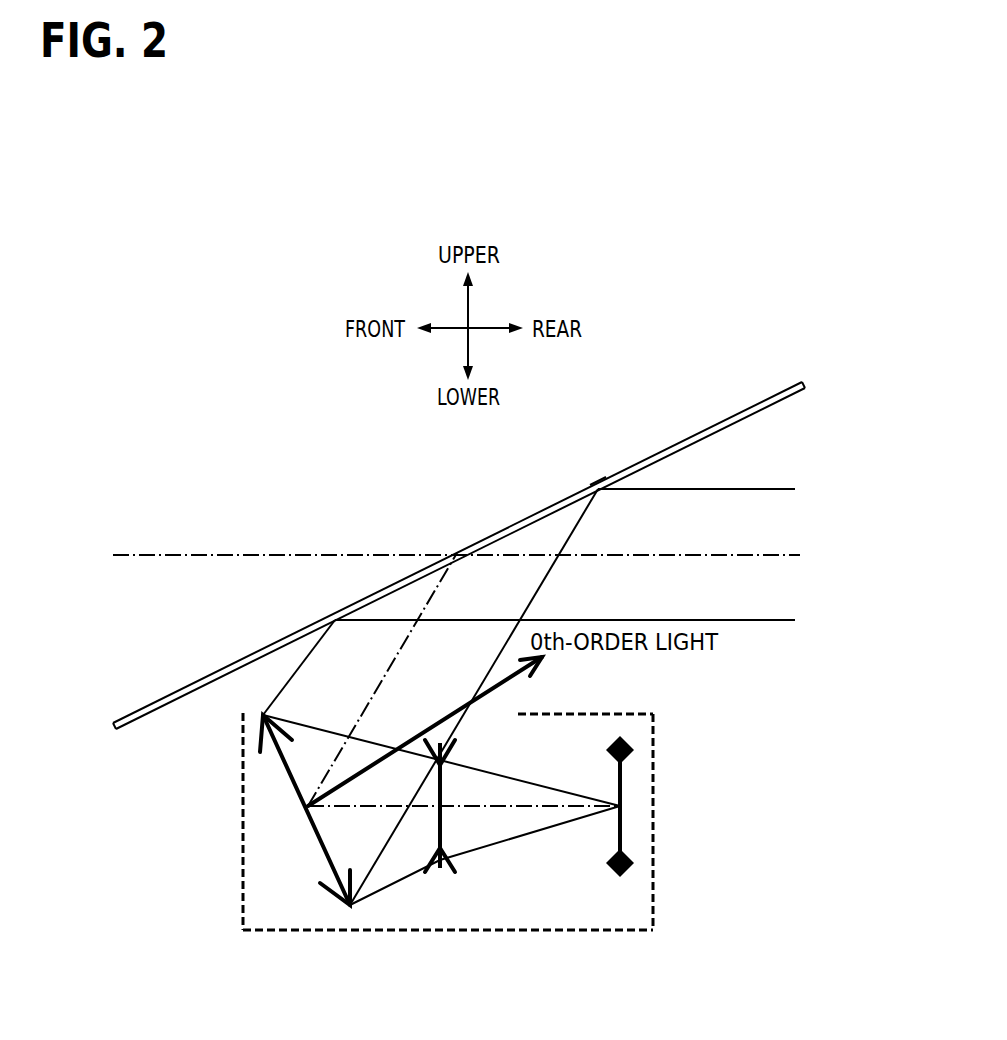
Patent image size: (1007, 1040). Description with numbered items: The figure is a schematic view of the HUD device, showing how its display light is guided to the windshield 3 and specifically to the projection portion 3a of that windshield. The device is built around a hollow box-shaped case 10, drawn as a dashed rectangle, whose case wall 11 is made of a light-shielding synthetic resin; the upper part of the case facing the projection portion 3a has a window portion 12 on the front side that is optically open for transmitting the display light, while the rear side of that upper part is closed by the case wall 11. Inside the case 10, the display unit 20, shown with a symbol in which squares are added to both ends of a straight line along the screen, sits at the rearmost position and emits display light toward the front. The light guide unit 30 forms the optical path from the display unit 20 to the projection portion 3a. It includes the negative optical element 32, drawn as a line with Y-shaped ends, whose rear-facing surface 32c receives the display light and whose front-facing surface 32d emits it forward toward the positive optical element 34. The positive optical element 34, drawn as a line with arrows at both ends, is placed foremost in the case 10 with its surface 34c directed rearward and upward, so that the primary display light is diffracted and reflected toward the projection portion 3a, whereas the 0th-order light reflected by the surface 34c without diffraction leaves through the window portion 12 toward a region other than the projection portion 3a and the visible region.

The windshield 3 is at (700, 430).
The projection portion 3a is at (570, 507).
The case 10 is at (489, 843).
The case wall 11 is at (603, 930).
The window portion 12 is at (492, 720).
The display unit 20 is at (623, 835).
The light guide unit 30 is at (311, 816).
The negative optical element 32 is at (441, 881).
The incident surface 32c is at (449, 830).
The emission surface 32d is at (432, 830).
The positive optical element 34 is at (235, 757).
The incident surface 34c is at (288, 763).